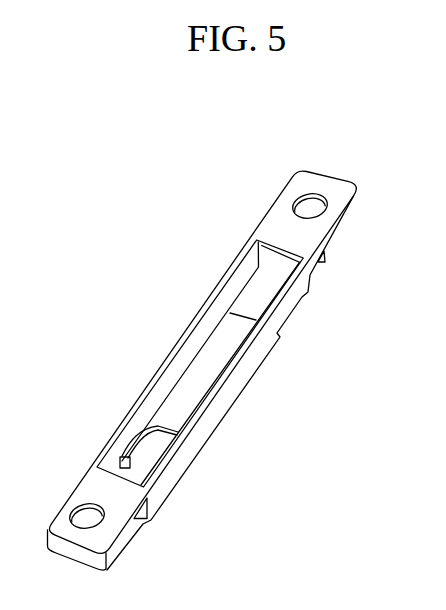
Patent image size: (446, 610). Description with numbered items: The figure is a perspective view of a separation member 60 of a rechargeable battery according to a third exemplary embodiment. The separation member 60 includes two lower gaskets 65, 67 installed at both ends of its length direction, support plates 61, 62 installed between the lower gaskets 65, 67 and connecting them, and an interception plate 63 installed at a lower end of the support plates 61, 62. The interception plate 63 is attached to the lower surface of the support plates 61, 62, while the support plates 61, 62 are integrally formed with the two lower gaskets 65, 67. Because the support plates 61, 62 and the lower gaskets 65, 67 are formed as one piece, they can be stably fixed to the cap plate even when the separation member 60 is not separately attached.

The separation member 60 is at (149, 303).
The support plate 61 is at (244, 262).
The support plate 62 is at (228, 378).
The interception plate 63 is at (186, 398).
The lower gasket 65 is at (114, 542).
The lower gasket 67 is at (335, 233).